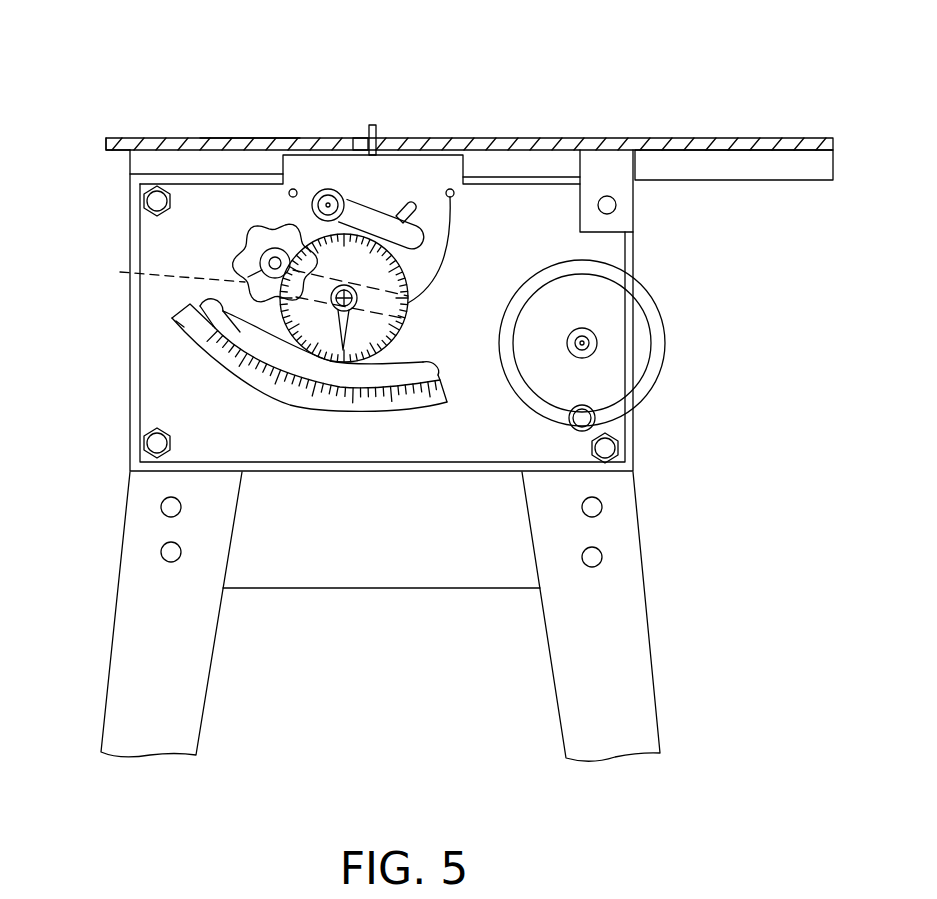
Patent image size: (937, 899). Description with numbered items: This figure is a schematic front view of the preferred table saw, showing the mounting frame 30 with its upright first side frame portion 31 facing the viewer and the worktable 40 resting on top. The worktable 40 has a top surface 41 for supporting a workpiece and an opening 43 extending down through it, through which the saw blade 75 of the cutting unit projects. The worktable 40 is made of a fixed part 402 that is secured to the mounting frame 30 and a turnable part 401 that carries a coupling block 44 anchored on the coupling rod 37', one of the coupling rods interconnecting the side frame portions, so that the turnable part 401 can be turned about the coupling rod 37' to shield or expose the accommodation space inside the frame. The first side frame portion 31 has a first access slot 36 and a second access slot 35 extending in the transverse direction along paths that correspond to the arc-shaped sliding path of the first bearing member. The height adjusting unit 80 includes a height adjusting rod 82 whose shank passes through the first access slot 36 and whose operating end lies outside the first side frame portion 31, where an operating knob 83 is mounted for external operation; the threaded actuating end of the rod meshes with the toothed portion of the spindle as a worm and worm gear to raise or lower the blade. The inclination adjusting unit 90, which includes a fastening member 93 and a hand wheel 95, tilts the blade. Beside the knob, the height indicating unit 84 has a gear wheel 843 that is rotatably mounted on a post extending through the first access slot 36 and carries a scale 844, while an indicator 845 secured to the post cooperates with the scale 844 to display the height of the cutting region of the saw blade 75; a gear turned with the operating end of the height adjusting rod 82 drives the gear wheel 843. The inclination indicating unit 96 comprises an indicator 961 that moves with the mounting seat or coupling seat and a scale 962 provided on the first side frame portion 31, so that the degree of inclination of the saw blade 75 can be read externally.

The mounting frame 30 is at (120, 451).
The first side frame portion 31 is at (153, 345).
The worktable 40 is at (182, 130).
The fixed part 402 is at (120, 137).
The top surface 41 is at (250, 137).
The opening 43 is at (359, 137).
The saw blade 75 is at (374, 124).
The turnable part 401 is at (778, 137).
The coupling block 44 is at (621, 191).
The coupling rod 37' is at (679, 214).
The fastening member 93 is at (327, 188).
The second access slot 35 is at (402, 208).
The first access slot 36 is at (450, 189).
The operating knob 83 is at (250, 238).
The height adjusting unit 80 is at (226, 258).
The height adjusting rod 82 is at (120, 272).
The height indicating unit 84 is at (418, 305).
The scale 844 is at (384, 352).
The indicator 845 is at (334, 352).
The inclination indicating unit 96 is at (203, 367).
The indicator 961 is at (200, 300).
The scale 962 is at (172, 315).
The gear wheel 843 is at (424, 345).
The inclination adjusting unit 90 is at (676, 343).
The hand wheel 95 is at (662, 384).